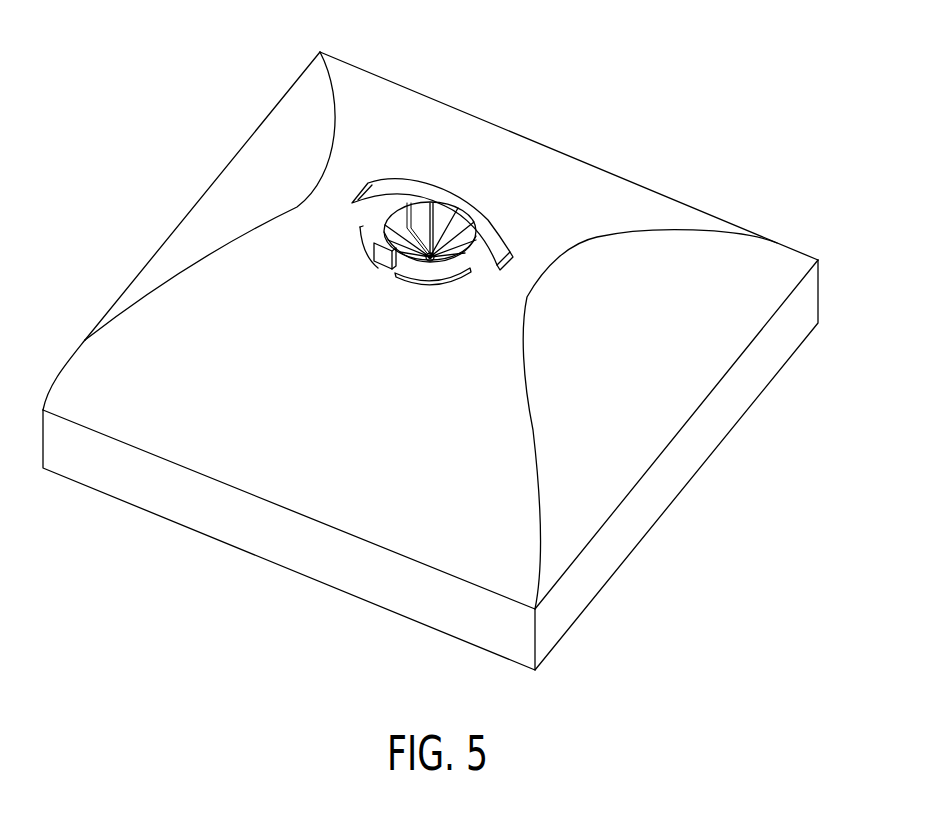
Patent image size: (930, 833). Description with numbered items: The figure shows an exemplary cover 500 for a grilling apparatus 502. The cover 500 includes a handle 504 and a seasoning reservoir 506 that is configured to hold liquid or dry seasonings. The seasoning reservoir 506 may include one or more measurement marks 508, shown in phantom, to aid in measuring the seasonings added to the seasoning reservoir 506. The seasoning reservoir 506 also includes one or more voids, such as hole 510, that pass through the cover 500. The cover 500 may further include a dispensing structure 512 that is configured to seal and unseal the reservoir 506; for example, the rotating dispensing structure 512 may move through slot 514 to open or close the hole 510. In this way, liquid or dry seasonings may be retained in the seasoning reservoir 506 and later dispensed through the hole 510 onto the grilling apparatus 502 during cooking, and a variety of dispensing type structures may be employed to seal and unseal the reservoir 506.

The cover 500 is at (478, 143).
The grilling apparatus 502 is at (159, 501).
The handle 504 is at (467, 210).
The seasoning reservoir 506 is at (418, 212).
The measurement marks 508 is at (401, 217).
The hole 510 is at (426, 260).
The dispensing structure 512 is at (378, 263).
The slot 514 is at (443, 283).